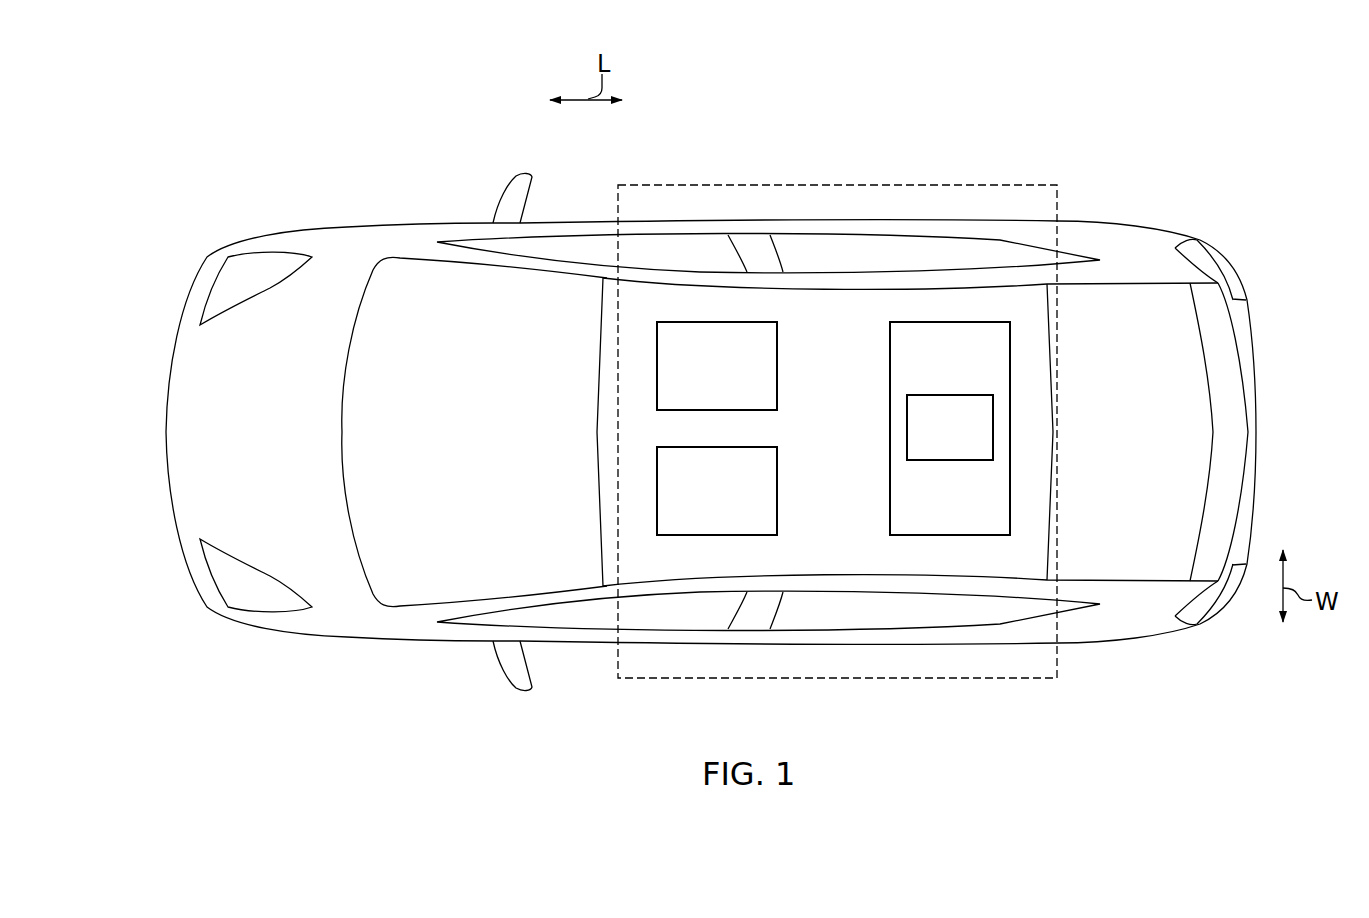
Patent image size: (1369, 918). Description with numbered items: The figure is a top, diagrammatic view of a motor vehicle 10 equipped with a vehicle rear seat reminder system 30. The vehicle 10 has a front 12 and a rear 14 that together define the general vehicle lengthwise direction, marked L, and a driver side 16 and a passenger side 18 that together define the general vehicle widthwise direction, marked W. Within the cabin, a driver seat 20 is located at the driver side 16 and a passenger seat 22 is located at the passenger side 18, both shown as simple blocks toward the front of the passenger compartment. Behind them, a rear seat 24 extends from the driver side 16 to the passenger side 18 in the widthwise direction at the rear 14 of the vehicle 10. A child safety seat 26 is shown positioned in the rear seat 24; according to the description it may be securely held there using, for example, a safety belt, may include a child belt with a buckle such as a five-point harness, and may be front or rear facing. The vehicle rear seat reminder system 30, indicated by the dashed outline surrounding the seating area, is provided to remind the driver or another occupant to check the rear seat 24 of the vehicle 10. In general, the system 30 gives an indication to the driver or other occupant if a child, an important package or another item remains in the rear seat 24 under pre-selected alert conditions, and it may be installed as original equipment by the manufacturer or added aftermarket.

The motor vehicle 10 is at (1098, 75).
The front 12 is at (152, 400).
The rear 14 is at (1280, 400).
The driver side 16 is at (545, 717).
The passenger side 18 is at (903, 133).
The driver seat 20 is at (777, 486).
The passenger seat 22 is at (777, 361).
The rear seat 24 is at (890, 518).
The child safety seat 26 is at (907, 419).
The vehicle rear seat reminder system 30 is at (1023, 679).